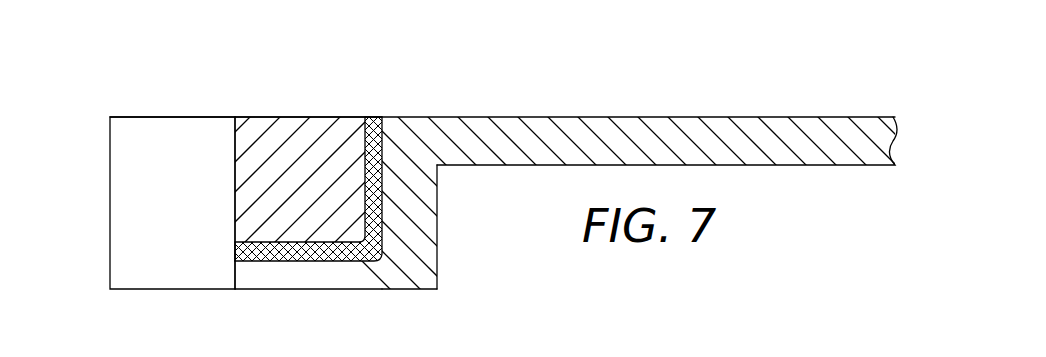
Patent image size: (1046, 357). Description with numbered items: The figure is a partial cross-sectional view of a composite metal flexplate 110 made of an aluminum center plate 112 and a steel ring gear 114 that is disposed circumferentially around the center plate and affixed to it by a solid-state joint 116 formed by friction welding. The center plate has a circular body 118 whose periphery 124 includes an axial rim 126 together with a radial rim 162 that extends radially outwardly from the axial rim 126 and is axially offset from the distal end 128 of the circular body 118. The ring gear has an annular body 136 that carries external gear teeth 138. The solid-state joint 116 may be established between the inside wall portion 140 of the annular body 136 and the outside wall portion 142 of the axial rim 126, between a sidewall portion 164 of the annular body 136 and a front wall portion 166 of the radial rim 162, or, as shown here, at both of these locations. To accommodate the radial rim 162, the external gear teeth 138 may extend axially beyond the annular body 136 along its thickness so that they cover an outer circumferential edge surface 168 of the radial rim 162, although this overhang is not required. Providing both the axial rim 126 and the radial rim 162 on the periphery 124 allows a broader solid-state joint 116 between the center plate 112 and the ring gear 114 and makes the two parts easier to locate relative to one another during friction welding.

The composite metal flexplate 110 is at (787, 74).
The aluminum center plate 112 is at (530, 88).
The steel ring gear 114 is at (233, 100).
The solid-state joint 116 is at (361, 141).
The circular body 118 is at (640, 130).
The periphery 124 is at (450, 99).
The axial rim 126 is at (410, 222).
The distal end 128 is at (412, 137).
The annular body 136 is at (283, 137).
The external gear teeth 138 is at (155, 140).
The inside wall portion 140 is at (353, 180).
The outside wall portion 142 is at (387, 188).
The radial rim 162 is at (330, 272).
The sidewall portion 164 is at (318, 235).
The front wall portion 166 is at (307, 264).
The outer circumferential edge surface 168 is at (232, 280).